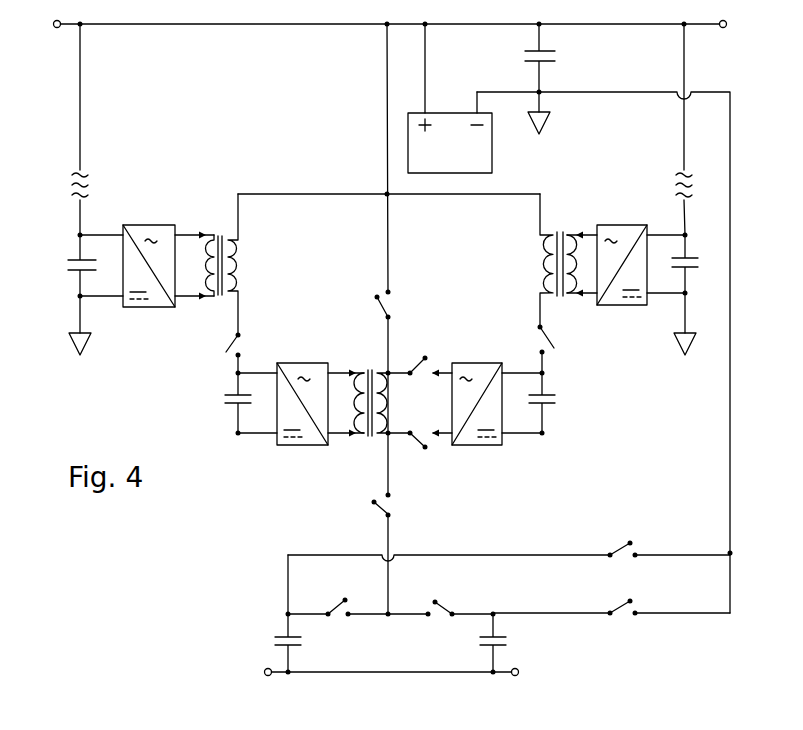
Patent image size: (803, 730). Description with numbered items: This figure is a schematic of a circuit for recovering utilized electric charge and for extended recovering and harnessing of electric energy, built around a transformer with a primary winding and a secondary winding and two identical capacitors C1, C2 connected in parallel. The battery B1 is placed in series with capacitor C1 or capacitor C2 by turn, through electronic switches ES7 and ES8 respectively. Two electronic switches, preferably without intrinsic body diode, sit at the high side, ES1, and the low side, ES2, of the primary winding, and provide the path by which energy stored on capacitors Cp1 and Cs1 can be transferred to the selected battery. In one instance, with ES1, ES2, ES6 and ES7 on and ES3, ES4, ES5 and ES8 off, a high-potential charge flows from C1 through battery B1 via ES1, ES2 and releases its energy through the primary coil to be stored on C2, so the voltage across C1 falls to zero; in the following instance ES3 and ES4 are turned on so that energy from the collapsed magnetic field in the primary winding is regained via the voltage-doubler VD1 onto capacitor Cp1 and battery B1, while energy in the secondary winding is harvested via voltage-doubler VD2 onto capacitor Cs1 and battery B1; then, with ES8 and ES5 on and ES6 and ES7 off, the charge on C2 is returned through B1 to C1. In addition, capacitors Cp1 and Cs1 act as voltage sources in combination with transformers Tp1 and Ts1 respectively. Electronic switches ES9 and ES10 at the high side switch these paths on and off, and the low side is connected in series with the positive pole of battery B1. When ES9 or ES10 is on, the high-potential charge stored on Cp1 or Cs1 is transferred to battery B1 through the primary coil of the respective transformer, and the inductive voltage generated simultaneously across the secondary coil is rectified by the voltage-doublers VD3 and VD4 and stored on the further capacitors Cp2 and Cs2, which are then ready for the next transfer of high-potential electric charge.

The battery B1 is at (450, 98).
The voltage-doubler VD1 is at (477, 390).
The voltage-doubler VD2 is at (302, 390).
The voltage-doubler VD3 is at (622, 250).
The voltage-doubler VD4 is at (149, 251).
The transformer Ts1 is at (247, 264).
The transformer Tp1 is at (528, 260).
The capacitor s1 Cs1 is at (218, 403).
The capacitor s2 Cs2 is at (57, 295).
The capacitor p1 Cp1 is at (565, 392).
The capacitor p2 Cp2 is at (705, 295).
The capacitor 1 C1 is at (272, 643).
The capacitor 2 C2 is at (509, 642).
The electronic switch ES1 is at (406, 302).
The electronic switch ES2 is at (404, 509).
The electronic switch ES3 is at (420, 356).
The electronic switch ES4 is at (420, 453).
The electronic switch ES5 is at (337, 597).
The electronic switch ES6 is at (440, 597).
The electronic switch ES7 is at (666, 535).
The electronic switch ES8 is at (611, 625).
The electronic switch ES9 is at (568, 342).
The electronic switch ES10 is at (213, 353).